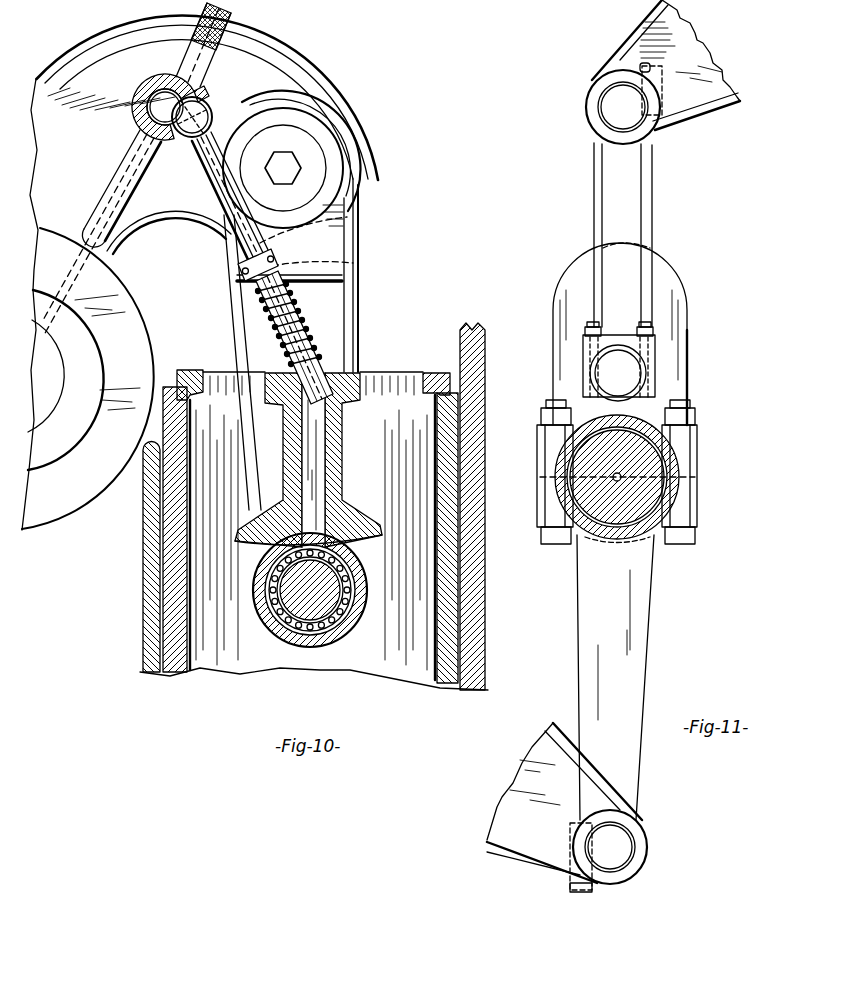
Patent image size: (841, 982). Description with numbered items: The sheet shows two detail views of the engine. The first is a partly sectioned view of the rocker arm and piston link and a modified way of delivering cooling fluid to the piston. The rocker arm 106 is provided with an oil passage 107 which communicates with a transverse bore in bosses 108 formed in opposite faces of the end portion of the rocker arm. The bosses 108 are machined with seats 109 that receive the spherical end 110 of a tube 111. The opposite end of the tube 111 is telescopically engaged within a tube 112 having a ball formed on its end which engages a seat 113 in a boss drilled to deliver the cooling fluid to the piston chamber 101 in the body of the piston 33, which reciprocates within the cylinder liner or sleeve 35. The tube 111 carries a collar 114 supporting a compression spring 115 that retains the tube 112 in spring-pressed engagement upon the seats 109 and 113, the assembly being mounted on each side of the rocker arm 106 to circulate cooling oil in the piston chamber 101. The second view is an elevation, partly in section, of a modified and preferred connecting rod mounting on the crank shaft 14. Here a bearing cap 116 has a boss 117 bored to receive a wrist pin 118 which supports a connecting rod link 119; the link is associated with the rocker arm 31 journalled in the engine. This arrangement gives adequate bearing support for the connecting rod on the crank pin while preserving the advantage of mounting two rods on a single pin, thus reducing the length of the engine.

In FIG. 10, the rocker arm 106 is at (62, 68).
In FIG. 10, the oil passage 107 is at (115, 192).
In FIG. 10, the bosses 108 is at (138, 108).
In FIG. 10, the seats 109 is at (186, 86).
In FIG. 10, the spherical end 110 is at (185, 136).
In FIG. 10, the tube 111 is at (218, 213).
In FIG. 10, the tube 112 is at (263, 312).
In FIG. 10, the seat 113 is at (360, 393).
In FIG. 10, the collar 114 is at (253, 247).
In FIG. 10, the compression spring 115 is at (291, 306).
In FIG. 10, the chamber 101 is at (308, 460).
In FIG. 10, the piston 33 is at (387, 650).
In FIG. 10, the liner 35 is at (447, 688).
In FIG. 11, the rocker arm 31 is at (682, 88).
In FIG. 11, the connecting rod link 119 is at (628, 211).
In FIG. 11, the bearing cap 116 is at (588, 405).
In FIG. 11, the boss 117 is at (648, 378).
In FIG. 11, the wrist pin 118 is at (633, 372).
In FIG. 11, the crank shaft 14 is at (658, 462).